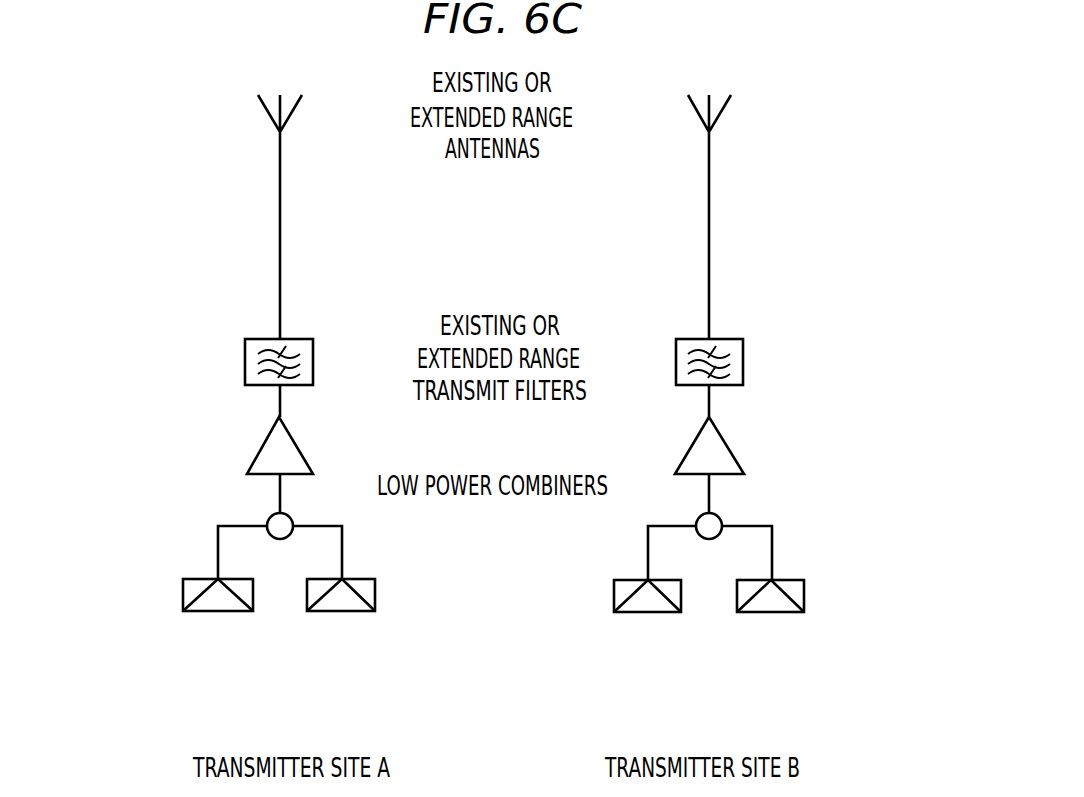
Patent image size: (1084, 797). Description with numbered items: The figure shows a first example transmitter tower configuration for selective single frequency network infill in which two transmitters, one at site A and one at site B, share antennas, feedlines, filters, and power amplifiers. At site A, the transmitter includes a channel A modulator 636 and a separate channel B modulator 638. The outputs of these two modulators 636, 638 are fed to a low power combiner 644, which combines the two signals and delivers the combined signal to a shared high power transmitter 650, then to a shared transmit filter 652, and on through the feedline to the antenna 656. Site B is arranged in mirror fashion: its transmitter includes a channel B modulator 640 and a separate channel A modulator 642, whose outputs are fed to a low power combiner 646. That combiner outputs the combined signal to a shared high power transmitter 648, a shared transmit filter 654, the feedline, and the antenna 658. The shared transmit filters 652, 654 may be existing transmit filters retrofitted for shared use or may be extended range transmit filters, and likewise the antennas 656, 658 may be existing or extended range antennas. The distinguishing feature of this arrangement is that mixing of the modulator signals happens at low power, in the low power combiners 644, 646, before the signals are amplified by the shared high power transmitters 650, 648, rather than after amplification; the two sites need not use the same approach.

The channel A modulator 636 is at (213, 645).
The channel B modulator 638 is at (347, 645).
The channel B modulator 640 is at (644, 645).
The channel A modulator 642 is at (777, 645).
The low power combiner 644 is at (292, 517).
The low power combiner 646 is at (697, 517).
The shared high power transmitter 648 is at (741, 440).
The shared high power transmitter 650 is at (254, 440).
The shared transmit filter 652 is at (313, 358).
The shared transmit filter 654 is at (676, 358).
The antenna 656 is at (296, 112).
The antenna 658 is at (694, 112).